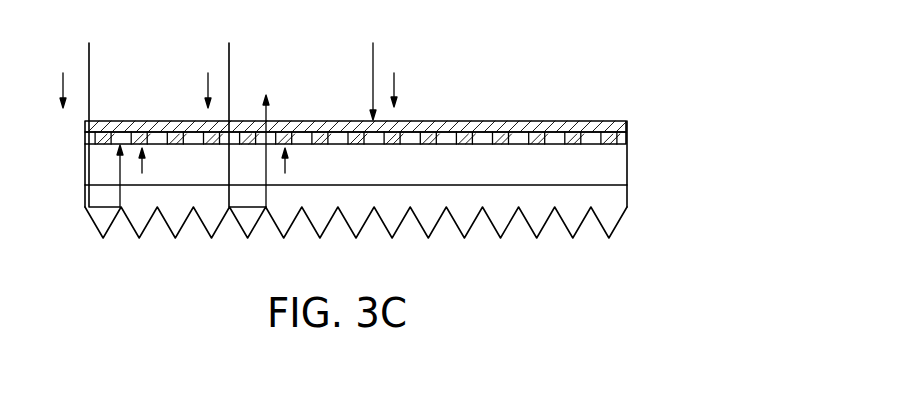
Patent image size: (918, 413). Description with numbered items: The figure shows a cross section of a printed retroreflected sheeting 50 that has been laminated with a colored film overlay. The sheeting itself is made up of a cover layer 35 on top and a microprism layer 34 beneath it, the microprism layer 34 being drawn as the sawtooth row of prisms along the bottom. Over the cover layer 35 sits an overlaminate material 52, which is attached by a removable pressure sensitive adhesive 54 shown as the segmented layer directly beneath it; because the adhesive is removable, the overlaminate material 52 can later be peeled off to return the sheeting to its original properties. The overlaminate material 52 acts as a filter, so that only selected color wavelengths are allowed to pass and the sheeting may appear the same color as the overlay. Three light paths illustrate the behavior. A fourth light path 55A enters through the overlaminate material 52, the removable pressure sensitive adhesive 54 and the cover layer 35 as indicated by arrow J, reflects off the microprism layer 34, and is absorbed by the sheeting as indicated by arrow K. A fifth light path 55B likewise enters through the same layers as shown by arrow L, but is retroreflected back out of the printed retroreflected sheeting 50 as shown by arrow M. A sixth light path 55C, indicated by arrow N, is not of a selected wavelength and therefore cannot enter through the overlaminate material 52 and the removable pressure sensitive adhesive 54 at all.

The printed retroreflected sheeting 50 is at (686, 152).
The overlaminate material 52 is at (609, 121).
The removable pressure sensitive adhesive 54 is at (624, 138).
The cover layer 35 is at (85, 165).
The microprism layer 34 is at (85, 199).
The fourth light path 55A is at (89, 61).
The fifth light path 55B is at (229, 61).
The sixth light path 55C is at (373, 61).
The arrow J is at (62, 81).
The arrow K is at (143, 172).
The arrow L is at (206, 81).
The arrow M is at (286, 172).
The arrow N is at (396, 82).